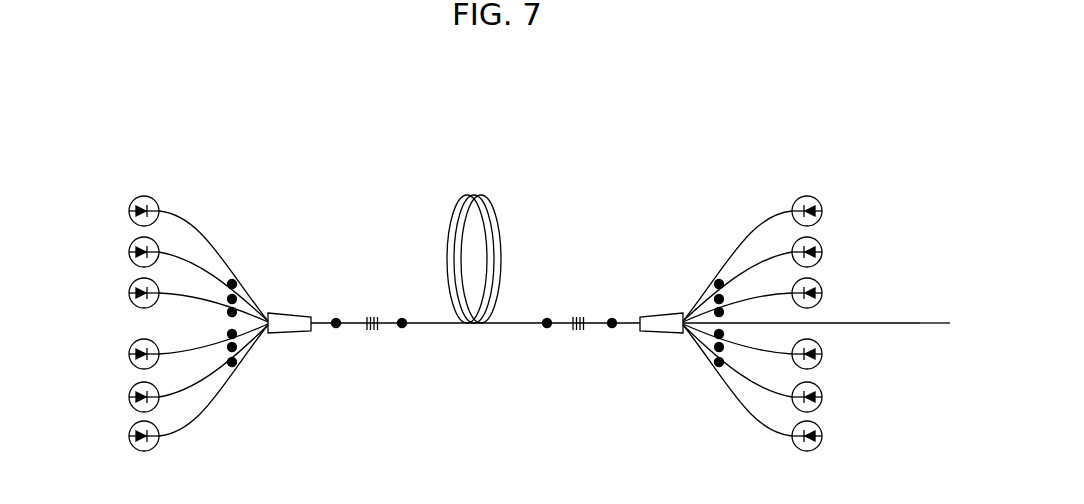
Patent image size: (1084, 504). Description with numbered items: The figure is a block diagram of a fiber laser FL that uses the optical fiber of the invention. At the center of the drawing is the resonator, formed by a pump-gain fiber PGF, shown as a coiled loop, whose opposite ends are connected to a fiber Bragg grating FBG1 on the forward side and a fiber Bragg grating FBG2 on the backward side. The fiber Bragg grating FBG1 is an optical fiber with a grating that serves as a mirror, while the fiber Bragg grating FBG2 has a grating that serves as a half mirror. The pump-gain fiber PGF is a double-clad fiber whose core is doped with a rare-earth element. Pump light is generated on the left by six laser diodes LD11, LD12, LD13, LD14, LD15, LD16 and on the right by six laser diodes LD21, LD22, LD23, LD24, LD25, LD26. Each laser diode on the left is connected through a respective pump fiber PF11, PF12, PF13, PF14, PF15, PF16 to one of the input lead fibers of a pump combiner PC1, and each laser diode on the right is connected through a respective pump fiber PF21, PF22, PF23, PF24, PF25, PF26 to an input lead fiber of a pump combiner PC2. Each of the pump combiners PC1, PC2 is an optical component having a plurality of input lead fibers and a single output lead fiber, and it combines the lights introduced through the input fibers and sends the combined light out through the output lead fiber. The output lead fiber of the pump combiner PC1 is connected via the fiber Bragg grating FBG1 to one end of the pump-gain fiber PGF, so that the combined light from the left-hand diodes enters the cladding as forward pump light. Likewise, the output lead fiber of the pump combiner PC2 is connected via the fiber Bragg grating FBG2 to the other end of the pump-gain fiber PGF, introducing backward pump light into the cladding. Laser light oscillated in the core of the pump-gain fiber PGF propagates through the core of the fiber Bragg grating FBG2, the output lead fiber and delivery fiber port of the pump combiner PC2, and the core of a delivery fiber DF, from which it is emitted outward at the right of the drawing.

The fiber laser FL is at (499, 290).
The laser diode LD11 is at (129, 213).
The laser diode LD12 is at (129, 254).
The laser diode LD13 is at (129, 295).
The laser diode LD14 is at (129, 356).
The laser diode LD15 is at (129, 399).
The laser diode LD16 is at (129, 438).
The laser diode LD21 is at (822, 213).
The laser diode LD22 is at (822, 254).
The laser diode LD23 is at (822, 295).
The laser diode LD24 is at (822, 356).
The laser diode LD25 is at (822, 399).
The laser diode LD26 is at (822, 438).
The pump fiber PF11 is at (178, 222).
The pump fiber PF12 is at (179, 260).
The pump fiber PF13 is at (179, 295).
The pump fiber PF14 is at (180, 355).
The pump fiber PF15 is at (178, 388).
The pump fiber PF16 is at (178, 427).
The pump fiber PF21 is at (773, 222).
The pump fiber PF22 is at (772, 260).
The pump fiber PF23 is at (772, 295).
The pump fiber PF24 is at (771, 355).
The pump fiber PF25 is at (773, 388).
The pump fiber PF26 is at (773, 427).
The pump combiner PC1 is at (292, 312).
The pump combiner PC2 is at (659, 312).
The fiber Bragg grating FBG1 is at (372, 331).
The fiber Bragg grating FBG2 is at (578, 331).
The pump-gain fiber PGF is at (473, 195).
The delivery fiber DF is at (937, 327).